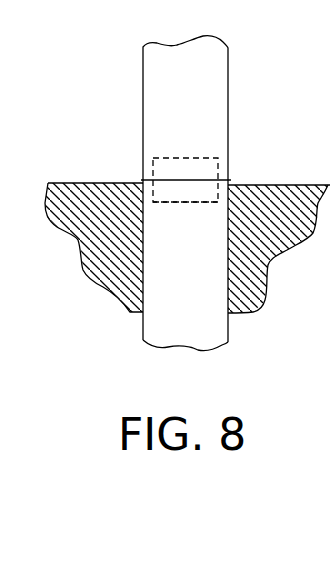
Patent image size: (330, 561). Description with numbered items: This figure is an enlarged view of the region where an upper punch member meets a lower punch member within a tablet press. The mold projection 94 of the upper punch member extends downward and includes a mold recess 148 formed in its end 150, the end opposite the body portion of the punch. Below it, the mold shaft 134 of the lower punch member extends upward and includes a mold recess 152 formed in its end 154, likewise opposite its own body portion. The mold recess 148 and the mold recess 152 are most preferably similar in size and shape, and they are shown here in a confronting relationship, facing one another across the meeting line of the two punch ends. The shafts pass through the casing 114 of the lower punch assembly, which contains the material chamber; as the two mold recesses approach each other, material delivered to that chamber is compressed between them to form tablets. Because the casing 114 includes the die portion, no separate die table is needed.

The mold projection 94 is at (217, 97).
The mold shaft 134 is at (210, 335).
The end of the mold shaft 154 is at (143, 182).
The casing 114 is at (300, 240).
The end of the mold projection 150 is at (228, 179).
The mold recess 148 is at (207, 164).
The mold recess 152 is at (185, 190).